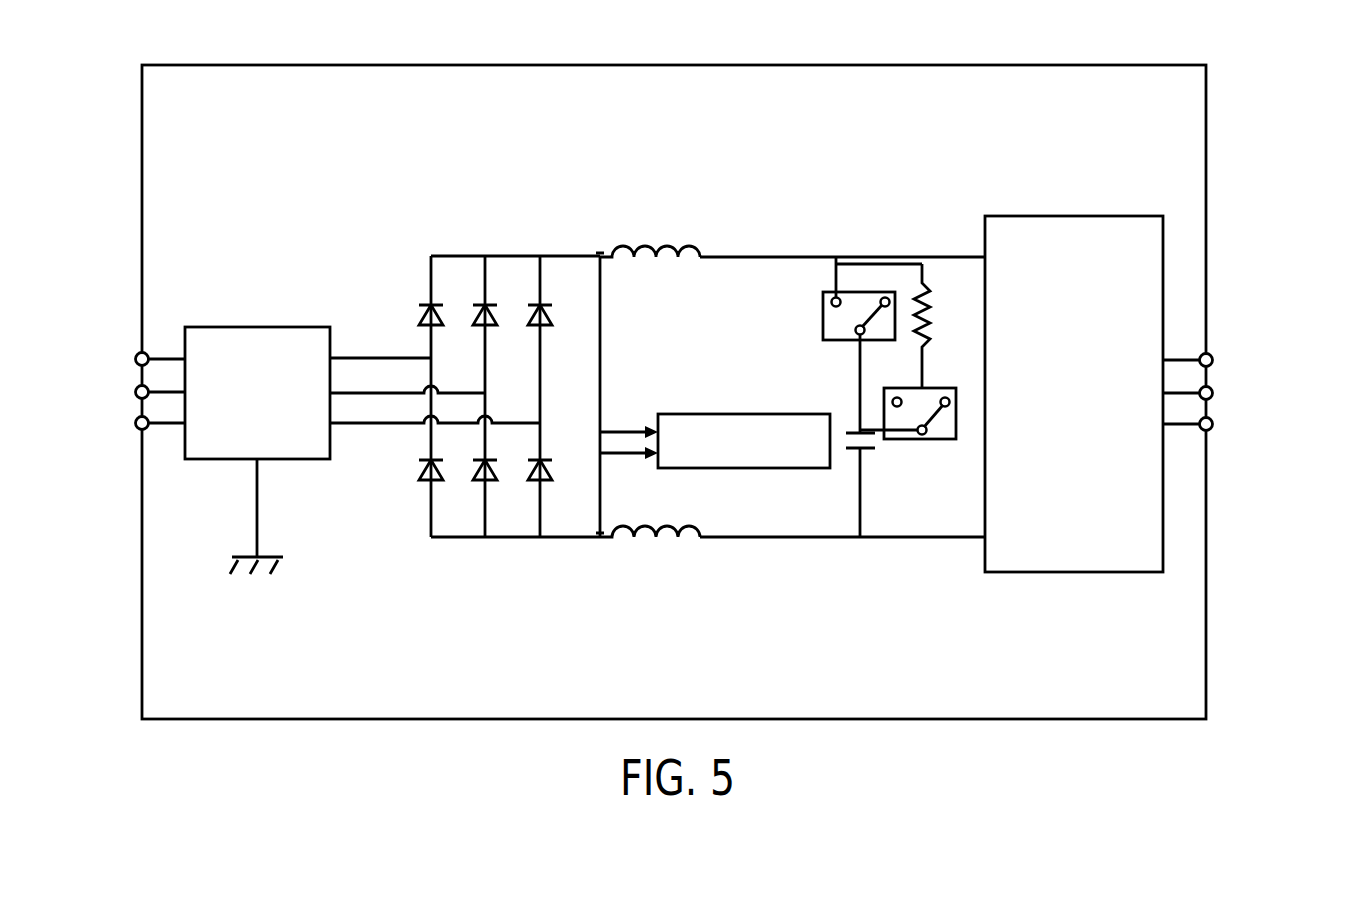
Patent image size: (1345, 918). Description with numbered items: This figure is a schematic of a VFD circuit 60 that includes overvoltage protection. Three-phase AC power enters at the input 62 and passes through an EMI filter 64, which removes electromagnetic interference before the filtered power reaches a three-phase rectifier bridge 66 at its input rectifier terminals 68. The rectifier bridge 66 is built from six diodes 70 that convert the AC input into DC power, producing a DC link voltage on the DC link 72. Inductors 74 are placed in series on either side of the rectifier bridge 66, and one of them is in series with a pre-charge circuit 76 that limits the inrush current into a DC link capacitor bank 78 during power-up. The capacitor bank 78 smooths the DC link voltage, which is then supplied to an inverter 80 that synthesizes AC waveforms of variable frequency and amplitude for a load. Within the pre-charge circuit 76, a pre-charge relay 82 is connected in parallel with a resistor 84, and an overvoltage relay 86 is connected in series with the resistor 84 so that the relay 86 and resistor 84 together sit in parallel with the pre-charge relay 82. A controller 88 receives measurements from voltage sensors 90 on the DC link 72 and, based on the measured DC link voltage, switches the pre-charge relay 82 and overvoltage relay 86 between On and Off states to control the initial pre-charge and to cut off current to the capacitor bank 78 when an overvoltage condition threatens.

The VFD circuit 60 is at (824, 106).
The input 62 is at (128, 434).
The EMI filter 64 is at (202, 326).
The three-phase rectifier bridge 66 is at (414, 321).
The input rectifier terminals 68 is at (432, 356).
The diodes 70 is at (492, 312).
The DC link 72 is at (842, 542).
The inductors 74 is at (652, 258).
The pre-charge circuit 76 is at (893, 248).
The DC link capacitor bank 78 is at (876, 450).
The inverter 80 is at (1015, 215).
The pre-charge relay 82 is at (822, 312).
The resistor 84 is at (932, 320).
The overvoltage relay 86 is at (945, 442).
The controller 88 is at (770, 469).
The voltage sensors 90 is at (600, 255).